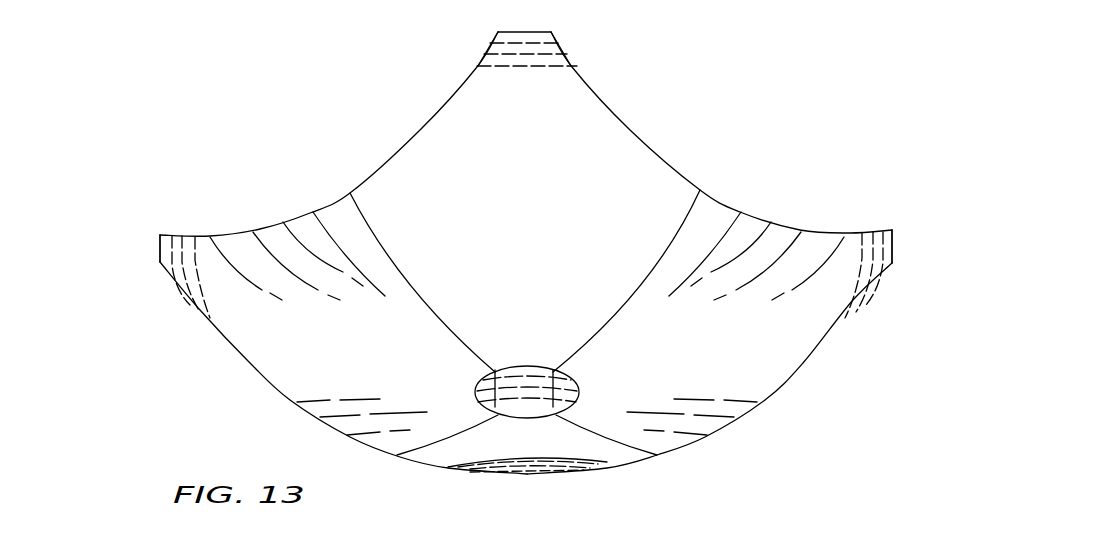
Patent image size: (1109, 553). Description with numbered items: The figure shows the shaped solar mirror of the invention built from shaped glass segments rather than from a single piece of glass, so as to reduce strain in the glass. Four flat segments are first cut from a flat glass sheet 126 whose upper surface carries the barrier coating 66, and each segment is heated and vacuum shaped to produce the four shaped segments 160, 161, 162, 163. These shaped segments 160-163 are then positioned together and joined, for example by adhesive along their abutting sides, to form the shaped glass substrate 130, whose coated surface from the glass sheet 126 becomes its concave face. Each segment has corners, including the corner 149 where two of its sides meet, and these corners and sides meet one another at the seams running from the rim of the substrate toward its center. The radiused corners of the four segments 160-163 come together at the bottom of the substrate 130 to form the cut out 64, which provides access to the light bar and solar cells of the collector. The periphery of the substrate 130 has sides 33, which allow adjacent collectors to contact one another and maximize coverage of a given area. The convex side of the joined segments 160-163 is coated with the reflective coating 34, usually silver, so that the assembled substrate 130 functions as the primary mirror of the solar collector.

The sides 33 is at (403, 128).
The reflective coating 34 is at (553, 34).
The cut out 64 is at (474, 397).
The barrier coating 66 is at (530, 211).
The flat glass sheet 126 is at (490, 44).
The shaped glass substrate 130 is at (731, 108).
The corner 149 is at (410, 288).
The shaped segment 160 is at (620, 72).
The shaped segment 161 is at (233, 357).
The shaped segment 162 is at (412, 466).
The shaped segment 163 is at (803, 363).